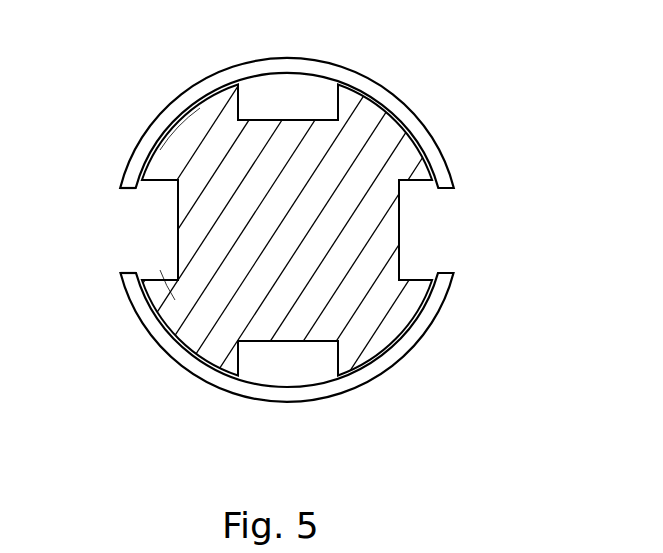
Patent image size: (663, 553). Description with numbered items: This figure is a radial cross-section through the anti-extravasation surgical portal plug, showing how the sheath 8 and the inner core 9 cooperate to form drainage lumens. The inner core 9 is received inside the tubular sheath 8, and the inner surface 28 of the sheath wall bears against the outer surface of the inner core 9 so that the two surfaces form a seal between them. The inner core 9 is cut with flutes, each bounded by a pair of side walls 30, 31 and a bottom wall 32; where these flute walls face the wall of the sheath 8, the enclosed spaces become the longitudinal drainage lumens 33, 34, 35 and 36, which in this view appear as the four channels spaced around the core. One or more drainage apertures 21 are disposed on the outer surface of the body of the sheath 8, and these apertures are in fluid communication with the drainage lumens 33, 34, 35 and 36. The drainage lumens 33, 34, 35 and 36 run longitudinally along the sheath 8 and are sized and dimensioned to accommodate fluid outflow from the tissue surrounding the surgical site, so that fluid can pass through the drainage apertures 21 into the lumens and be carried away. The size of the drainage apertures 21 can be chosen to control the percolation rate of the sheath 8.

The sheath 8 is at (202, 80).
The inner core 9 is at (348, 147).
The drainage apertures 21 is at (480, 196).
The inner surface of the sheath wall 28 is at (181, 140).
The side wall of flute 30 is at (153, 182).
The side wall of flute 31 is at (157, 278).
The bottom wall of flute 32 is at (177, 220).
The drainage lumen 33 is at (308, 90).
The drainage lumen 34 is at (418, 252).
The drainage lumen 35 is at (277, 373).
The drainage lumen 36 is at (170, 262).